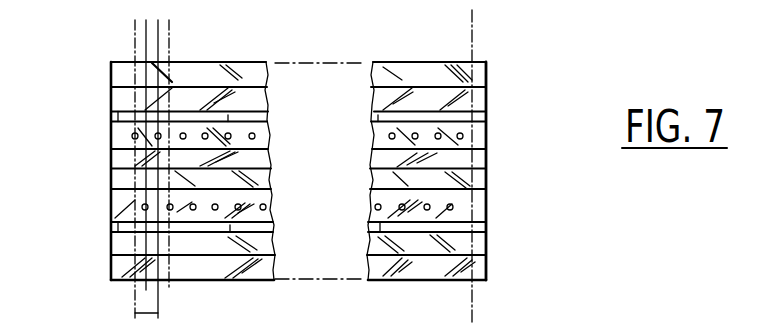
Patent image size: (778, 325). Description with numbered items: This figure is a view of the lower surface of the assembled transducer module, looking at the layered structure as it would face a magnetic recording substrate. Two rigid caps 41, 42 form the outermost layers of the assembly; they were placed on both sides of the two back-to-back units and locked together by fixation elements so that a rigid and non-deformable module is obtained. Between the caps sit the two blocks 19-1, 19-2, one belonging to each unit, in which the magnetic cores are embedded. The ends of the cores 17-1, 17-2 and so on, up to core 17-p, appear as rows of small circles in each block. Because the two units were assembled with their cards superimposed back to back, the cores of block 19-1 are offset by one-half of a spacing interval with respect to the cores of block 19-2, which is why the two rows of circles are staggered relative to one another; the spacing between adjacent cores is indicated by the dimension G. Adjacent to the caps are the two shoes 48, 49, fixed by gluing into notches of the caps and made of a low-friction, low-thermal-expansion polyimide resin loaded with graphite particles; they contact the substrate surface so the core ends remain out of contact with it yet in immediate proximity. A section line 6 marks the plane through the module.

The rigid cap 42 is at (486, 70).
The shoe 48 is at (486, 98).
The block 19-2 is at (478, 140).
The block 19-1 is at (486, 210).
The shoe 49 is at (486, 240).
The rigid cap 41 is at (486, 266).
The section line 6 is at (472, 38).
The magnetic core 17-2 is at (156, 134).
The magnetic core 17-1 is at (132, 135).
The p-th conductor wire 17-p is at (141, 207).
The wire pitch gap G is at (122, 313).